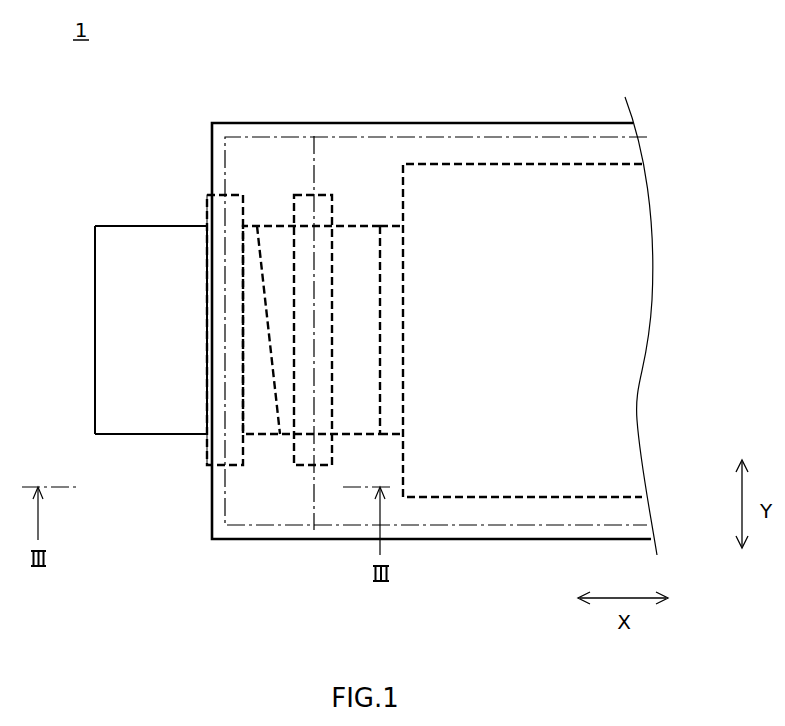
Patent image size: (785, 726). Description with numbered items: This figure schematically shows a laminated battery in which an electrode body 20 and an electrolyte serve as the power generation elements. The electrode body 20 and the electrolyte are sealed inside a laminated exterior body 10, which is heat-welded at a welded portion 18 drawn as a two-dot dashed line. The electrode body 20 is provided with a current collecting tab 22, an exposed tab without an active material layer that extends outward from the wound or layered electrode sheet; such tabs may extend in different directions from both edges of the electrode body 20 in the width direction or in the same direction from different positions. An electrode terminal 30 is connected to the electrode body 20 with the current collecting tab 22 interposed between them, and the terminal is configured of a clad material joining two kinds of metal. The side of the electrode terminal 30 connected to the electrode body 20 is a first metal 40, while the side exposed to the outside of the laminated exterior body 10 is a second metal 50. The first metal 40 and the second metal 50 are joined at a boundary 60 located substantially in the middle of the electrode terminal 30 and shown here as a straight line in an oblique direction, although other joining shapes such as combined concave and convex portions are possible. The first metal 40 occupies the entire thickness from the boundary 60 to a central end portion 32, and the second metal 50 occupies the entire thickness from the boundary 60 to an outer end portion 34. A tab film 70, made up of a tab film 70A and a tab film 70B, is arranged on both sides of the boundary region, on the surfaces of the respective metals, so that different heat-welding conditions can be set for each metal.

The laminated exterior body 10 is at (505, 122).
The welded portion 18 is at (552, 132).
The electrode body 20 is at (452, 177).
The current collecting tab 22 is at (390, 250).
The electrode terminal 30 is at (122, 226).
The central end portion 32 is at (381, 393).
The outer end portion 34 is at (95, 270).
The first metal 40 is at (353, 257).
The second metal 50 is at (173, 240).
The boundary 60 is at (270, 322).
The tab film 70 is at (267, 433).
The tab film 70A is at (233, 462).
The tab film 70B is at (300, 473).